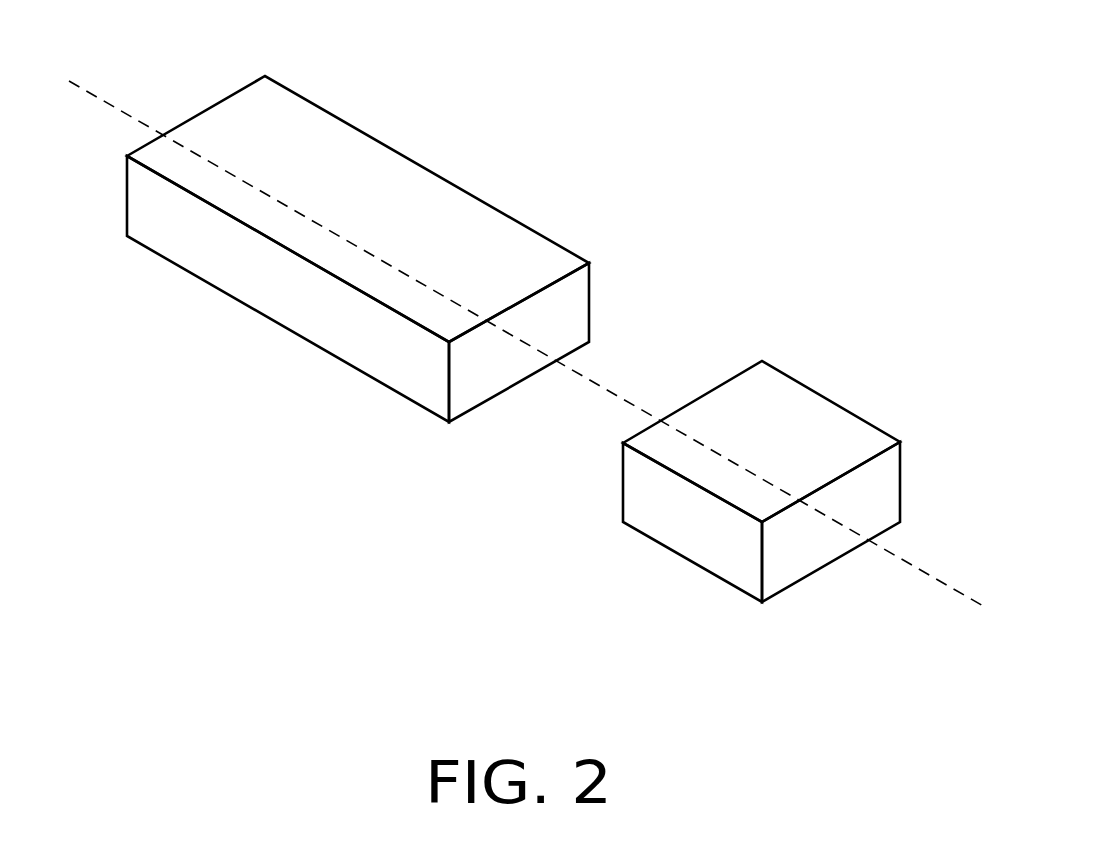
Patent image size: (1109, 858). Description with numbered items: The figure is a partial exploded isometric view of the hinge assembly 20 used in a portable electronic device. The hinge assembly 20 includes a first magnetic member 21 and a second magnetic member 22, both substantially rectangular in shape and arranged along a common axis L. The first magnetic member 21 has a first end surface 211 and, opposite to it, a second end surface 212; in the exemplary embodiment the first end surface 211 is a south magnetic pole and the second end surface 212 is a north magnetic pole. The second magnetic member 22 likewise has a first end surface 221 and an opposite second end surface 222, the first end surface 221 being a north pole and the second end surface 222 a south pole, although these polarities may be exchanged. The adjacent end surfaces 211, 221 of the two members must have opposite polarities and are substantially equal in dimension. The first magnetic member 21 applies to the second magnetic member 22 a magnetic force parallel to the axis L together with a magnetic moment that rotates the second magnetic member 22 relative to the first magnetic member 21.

The hinge assembly 20 is at (541, 329).
The first magnetic member 21 is at (745, 486).
The first end surface 211 is at (623, 482).
The second end surface 212 is at (792, 548).
The second magnetic member 22 is at (395, 249).
The first end surface 221 is at (492, 370).
The second end surface 222 is at (193, 115).
The axis L is at (527, 344).